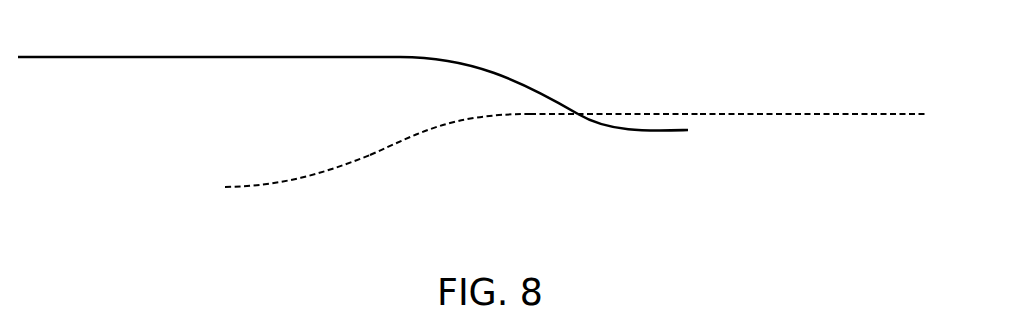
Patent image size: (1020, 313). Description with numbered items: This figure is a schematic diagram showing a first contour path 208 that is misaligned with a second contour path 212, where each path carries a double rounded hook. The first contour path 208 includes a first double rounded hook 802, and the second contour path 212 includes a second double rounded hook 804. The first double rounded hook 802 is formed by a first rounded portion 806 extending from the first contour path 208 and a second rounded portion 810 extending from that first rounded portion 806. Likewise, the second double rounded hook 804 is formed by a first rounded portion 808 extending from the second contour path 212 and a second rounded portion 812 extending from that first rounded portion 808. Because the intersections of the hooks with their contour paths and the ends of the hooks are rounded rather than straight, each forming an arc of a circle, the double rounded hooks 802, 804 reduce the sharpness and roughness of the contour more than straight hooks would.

The second contour path 212 is at (119, 59).
The first rounded portion 808 is at (483, 66).
The second rounded portion 810 is at (620, 132).
The first double rounded hook 802 is at (268, 187).
The second rounded portion 812 is at (318, 176).
The first rounded portion 806 is at (437, 126).
The second double rounded hook 804 is at (620, 113).
The first contour path 208 is at (815, 116).